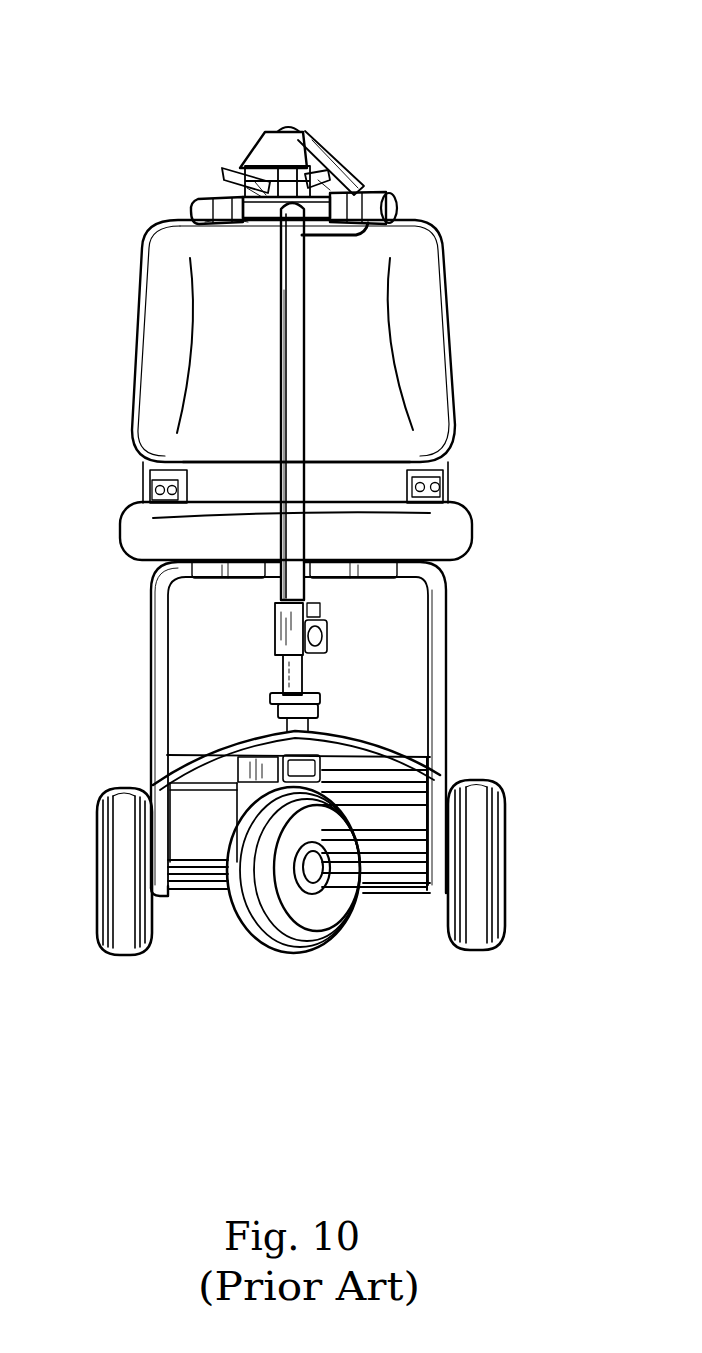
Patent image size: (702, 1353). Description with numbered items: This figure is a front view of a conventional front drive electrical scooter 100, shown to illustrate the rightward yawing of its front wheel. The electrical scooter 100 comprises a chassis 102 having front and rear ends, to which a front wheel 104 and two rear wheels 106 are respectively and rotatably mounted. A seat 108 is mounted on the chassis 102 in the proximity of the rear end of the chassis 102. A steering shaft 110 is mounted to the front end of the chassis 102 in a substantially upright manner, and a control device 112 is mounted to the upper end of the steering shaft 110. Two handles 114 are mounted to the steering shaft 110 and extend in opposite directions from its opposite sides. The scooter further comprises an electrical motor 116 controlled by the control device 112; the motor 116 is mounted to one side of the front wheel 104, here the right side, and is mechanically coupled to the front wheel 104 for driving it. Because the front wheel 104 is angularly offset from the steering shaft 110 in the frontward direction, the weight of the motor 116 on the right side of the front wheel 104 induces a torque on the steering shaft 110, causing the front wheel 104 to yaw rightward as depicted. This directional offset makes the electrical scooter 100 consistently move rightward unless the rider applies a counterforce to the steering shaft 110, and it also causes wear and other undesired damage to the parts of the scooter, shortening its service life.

The electrical scooter 100 is at (276, 81).
The chassis 102 is at (200, 885).
The front wheel 104 is at (300, 937).
The rear wheels 106 is at (125, 928).
The seat 108 is at (418, 303).
The steering shaft 110 is at (292, 382).
The control device 112 is at (300, 130).
The handles 114 is at (216, 207).
The electrical motor 116 is at (400, 830).